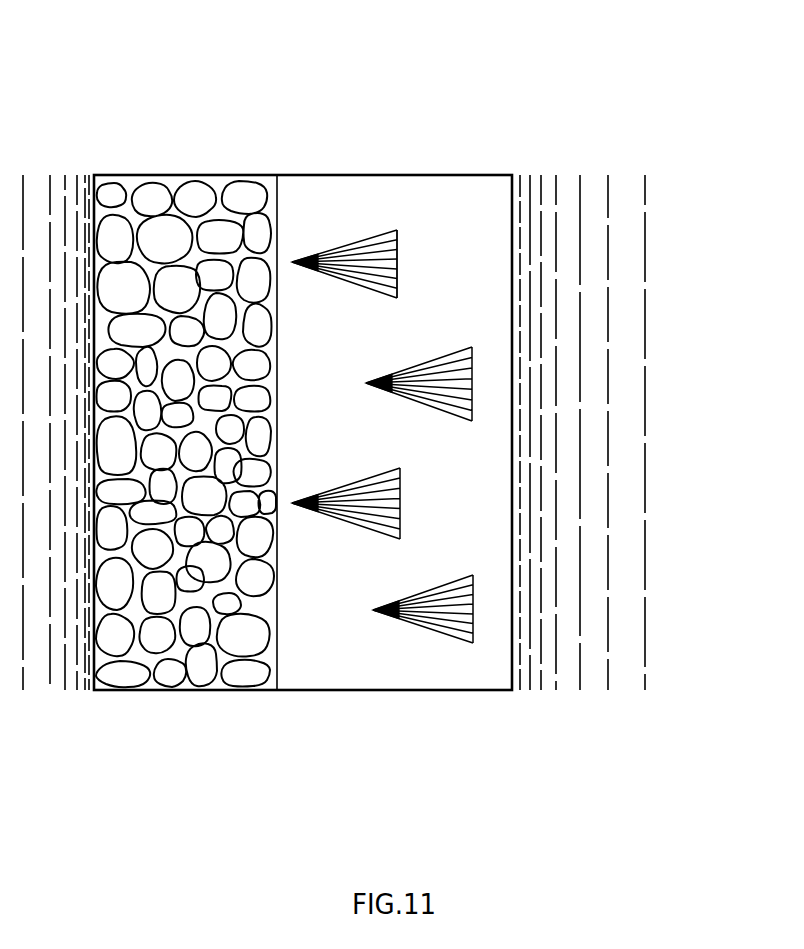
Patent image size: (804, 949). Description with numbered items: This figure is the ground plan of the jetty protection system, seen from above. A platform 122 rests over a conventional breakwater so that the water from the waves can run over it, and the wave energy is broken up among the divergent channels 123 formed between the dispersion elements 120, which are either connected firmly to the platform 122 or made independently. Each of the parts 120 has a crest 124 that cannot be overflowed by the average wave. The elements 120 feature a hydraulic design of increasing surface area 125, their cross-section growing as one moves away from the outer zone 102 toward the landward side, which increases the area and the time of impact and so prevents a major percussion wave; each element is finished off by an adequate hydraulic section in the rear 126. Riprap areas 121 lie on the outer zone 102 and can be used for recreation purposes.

The outer zone 102 is at (64, 190).
The dispersion elements 120 is at (345, 523).
The riprap areas 121 is at (117, 196).
The platform 122 is at (287, 195).
The divergent channels 123 is at (492, 308).
The crest 124 is at (400, 495).
The increasing surface area 125 is at (350, 253).
The hydraulic section in the rear 126 is at (397, 230).